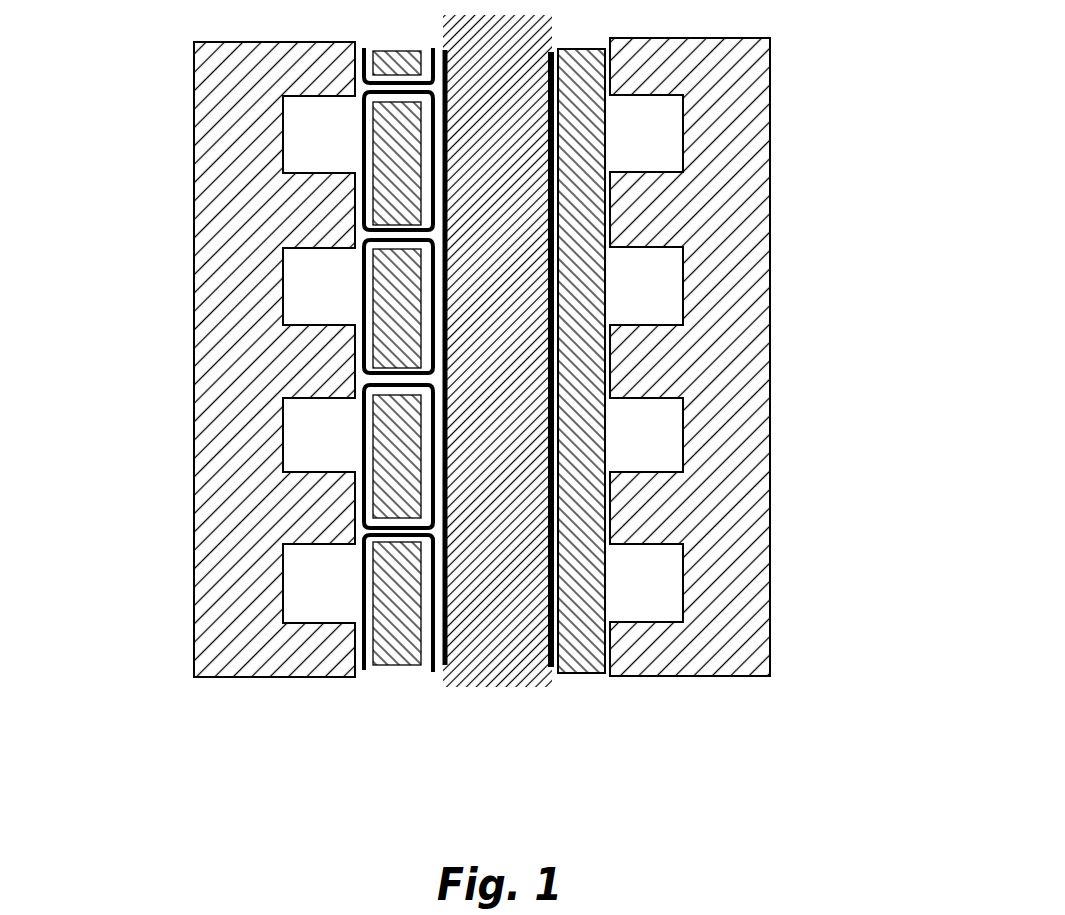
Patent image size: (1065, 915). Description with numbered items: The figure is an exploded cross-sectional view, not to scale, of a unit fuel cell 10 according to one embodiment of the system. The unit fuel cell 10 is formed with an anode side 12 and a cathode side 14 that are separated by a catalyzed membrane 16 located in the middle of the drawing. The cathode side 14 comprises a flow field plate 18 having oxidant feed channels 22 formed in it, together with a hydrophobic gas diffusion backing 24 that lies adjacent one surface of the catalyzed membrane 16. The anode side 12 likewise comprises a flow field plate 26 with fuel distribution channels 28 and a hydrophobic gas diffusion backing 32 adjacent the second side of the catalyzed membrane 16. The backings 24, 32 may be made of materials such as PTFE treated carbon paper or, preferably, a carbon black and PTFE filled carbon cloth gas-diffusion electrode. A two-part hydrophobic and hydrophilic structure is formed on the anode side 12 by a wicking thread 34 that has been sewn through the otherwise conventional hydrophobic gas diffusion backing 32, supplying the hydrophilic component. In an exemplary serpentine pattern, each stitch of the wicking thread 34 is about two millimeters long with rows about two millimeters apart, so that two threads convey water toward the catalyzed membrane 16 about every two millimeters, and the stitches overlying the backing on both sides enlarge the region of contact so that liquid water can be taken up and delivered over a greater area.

The unit fuel cell 10 is at (504, 425).
The anode side 12 is at (239, 368).
The cathode side 14 is at (760, 357).
The catalyzed membrane 16 is at (532, 135).
The flow field plate 18 is at (741, 357).
The oxidant feed channels 22 is at (655, 275).
The hydrophobic gas diffusion backing 24 is at (585, 443).
The flow field plate 26 is at (223, 368).
The fuel distribution channels 28 is at (317, 288).
The hydrophobic gas diffusion backing 32 is at (385, 456).
The wicking thread 34 is at (357, 137).